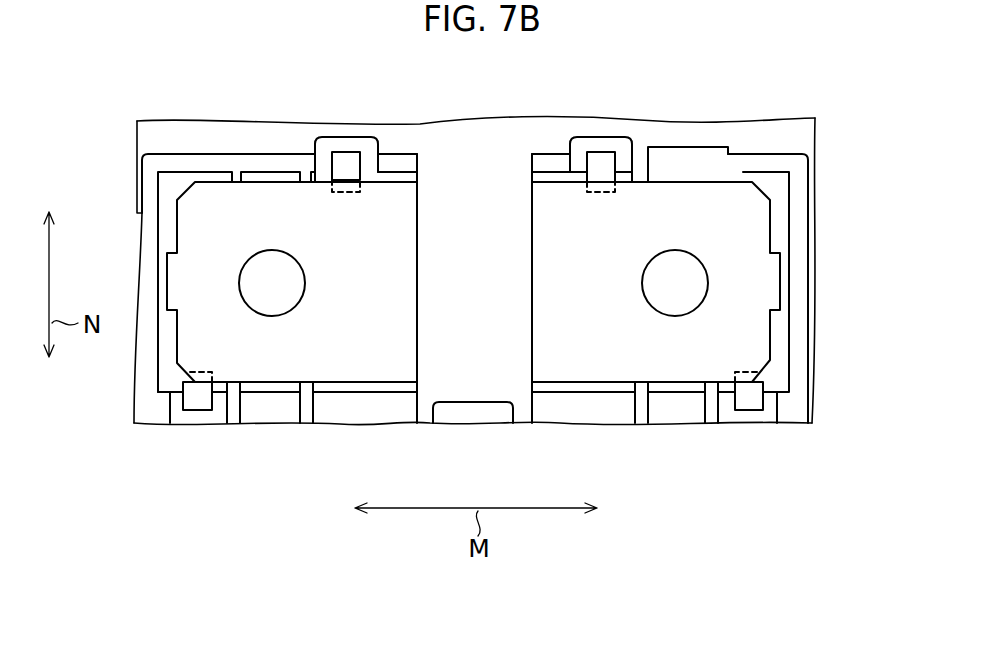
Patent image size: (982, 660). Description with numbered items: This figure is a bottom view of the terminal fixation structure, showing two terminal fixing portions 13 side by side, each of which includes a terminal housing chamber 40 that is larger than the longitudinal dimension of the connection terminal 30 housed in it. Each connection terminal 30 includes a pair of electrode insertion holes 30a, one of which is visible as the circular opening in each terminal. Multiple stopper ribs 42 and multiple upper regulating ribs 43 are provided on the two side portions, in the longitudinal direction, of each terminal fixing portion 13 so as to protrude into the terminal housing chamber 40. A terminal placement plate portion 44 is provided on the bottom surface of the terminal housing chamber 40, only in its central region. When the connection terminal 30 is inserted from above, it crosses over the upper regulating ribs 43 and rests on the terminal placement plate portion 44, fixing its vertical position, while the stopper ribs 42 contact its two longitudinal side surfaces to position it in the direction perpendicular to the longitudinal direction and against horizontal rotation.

The terminal fixing portion 13 is at (808, 205).
The connection terminal 30 is at (573, 340).
The electrode insertion hole 30a is at (256, 292).
The terminal housing chamber 40 is at (790, 352).
The stopper rib 42 is at (308, 172).
The upper regulating rib 43 is at (347, 167).
The terminal placement plate portion 44 is at (473, 320).